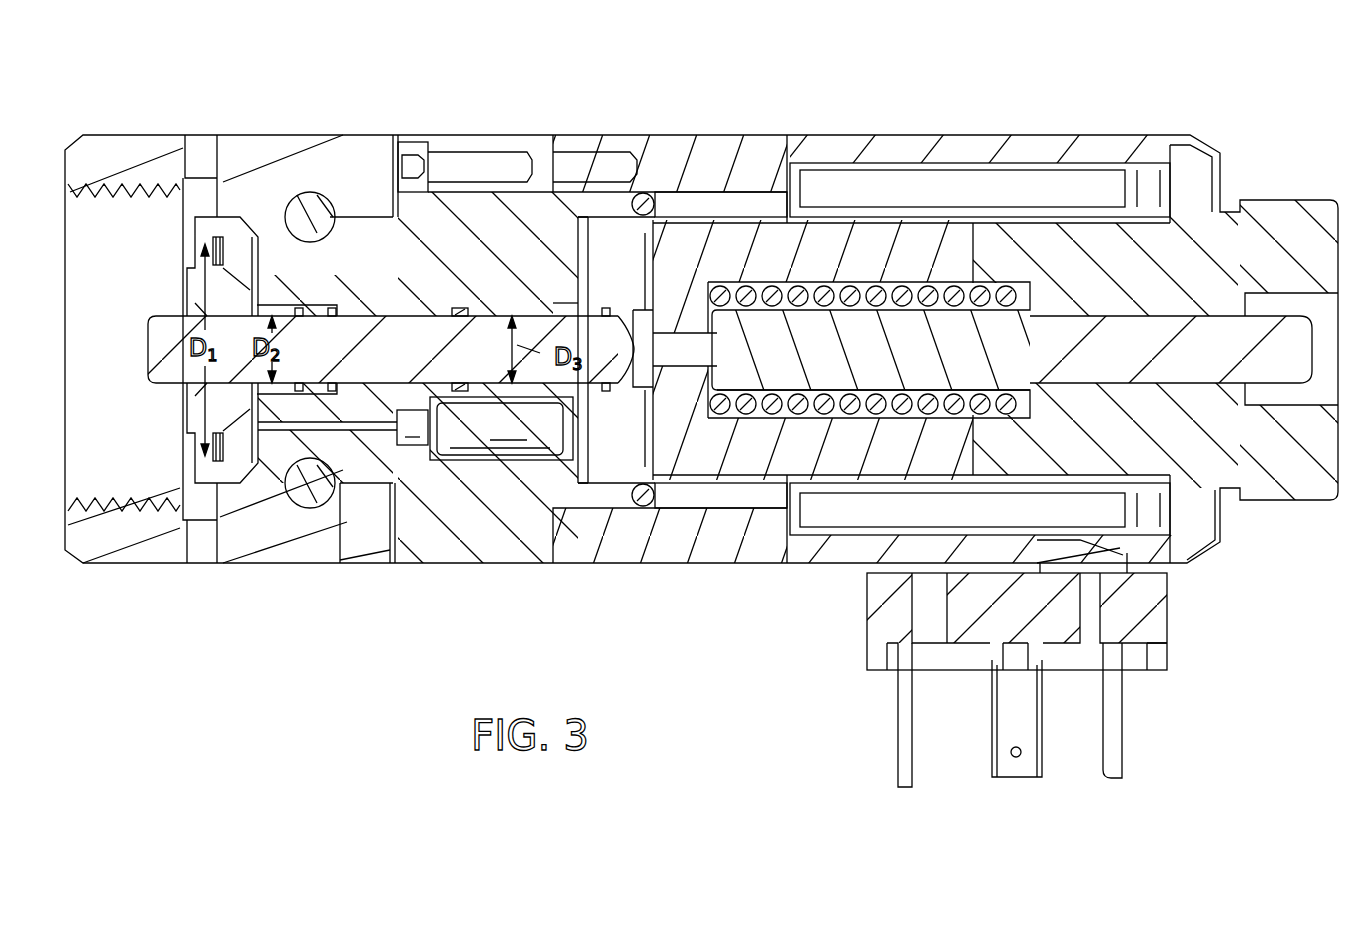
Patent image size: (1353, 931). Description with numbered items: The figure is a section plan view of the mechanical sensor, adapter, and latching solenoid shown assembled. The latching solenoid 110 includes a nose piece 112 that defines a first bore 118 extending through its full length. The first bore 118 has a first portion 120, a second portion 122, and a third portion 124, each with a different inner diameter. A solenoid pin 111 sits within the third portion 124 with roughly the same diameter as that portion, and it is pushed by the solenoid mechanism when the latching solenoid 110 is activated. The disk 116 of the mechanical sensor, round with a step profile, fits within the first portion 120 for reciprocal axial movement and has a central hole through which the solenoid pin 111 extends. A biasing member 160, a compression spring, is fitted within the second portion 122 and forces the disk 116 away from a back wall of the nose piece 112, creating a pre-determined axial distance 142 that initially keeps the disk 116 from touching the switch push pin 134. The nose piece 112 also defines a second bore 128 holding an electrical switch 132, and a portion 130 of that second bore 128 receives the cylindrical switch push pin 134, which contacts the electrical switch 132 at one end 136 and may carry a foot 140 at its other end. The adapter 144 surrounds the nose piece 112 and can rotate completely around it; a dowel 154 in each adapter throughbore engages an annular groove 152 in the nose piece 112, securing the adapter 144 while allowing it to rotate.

The latching solenoid 110 is at (762, 148).
The solenoid pin 111 is at (443, 316).
The nose piece 112 is at (523, 543).
The disk 116 is at (197, 410).
The first bore 118 is at (545, 302).
The first portion 120 is at (205, 247).
The second portion 122 is at (352, 313).
The third portion 124 is at (378, 215).
The second bore 128 is at (585, 485).
The portion of the second bore 130 is at (357, 385).
The electrical switch 132 is at (472, 437).
The switch push pin 134 is at (350, 430).
The one end 136 is at (400, 447).
The foot 140 is at (255, 453).
The pre-determined axial distance 142 is at (245, 475).
The adapter 144 is at (247, 160).
The annular groove 152 is at (330, 515).
The dowel 154 is at (313, 200).
The biasing member 160 is at (317, 302).